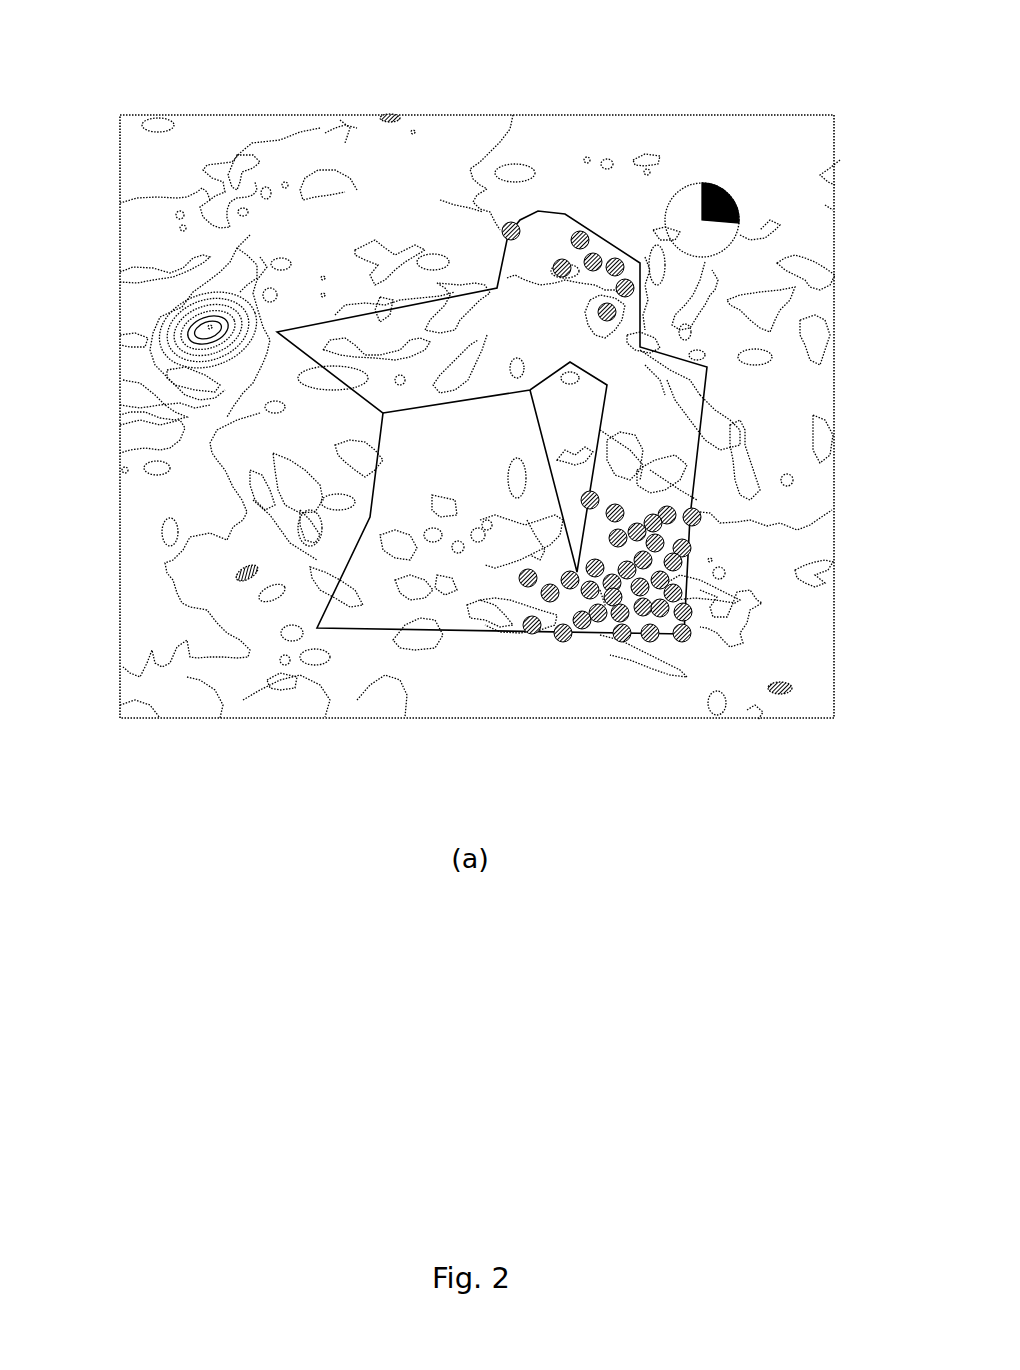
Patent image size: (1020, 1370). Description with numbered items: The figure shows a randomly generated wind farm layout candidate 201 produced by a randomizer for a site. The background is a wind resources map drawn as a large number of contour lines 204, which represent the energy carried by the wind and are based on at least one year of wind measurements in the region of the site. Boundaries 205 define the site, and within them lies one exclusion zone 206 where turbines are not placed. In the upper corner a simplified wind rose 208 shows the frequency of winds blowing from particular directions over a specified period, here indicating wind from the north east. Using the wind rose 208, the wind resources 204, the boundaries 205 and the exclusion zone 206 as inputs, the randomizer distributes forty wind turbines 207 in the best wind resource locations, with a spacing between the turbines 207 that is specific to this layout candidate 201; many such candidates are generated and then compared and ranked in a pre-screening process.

The layout candidate 201 is at (304, 83).
The contour lines 204 is at (805, 263).
The boundaries 205 is at (565, 214).
The exclusion zone 206 is at (553, 412).
The wind turbines 207 is at (505, 226).
The wind rose 208 is at (733, 200).